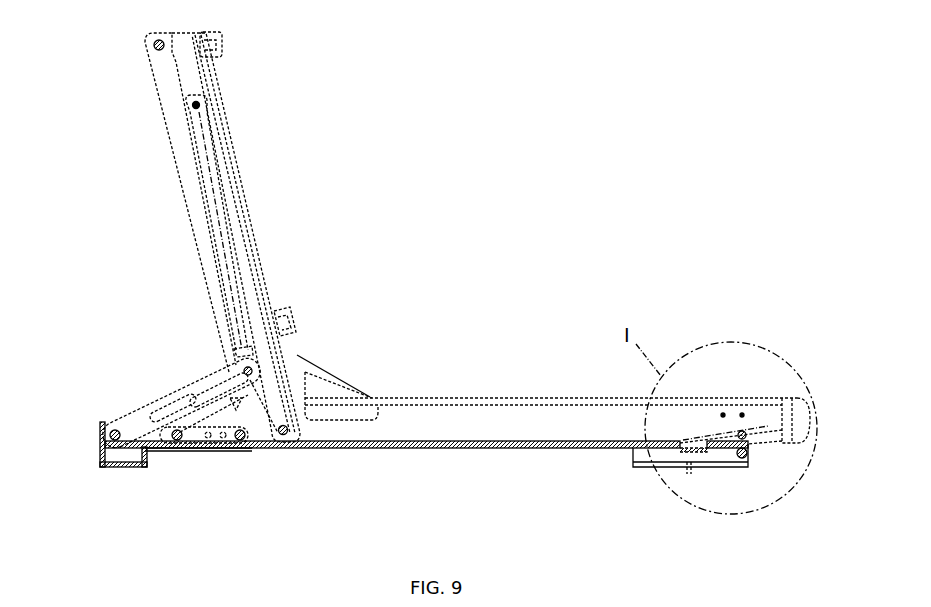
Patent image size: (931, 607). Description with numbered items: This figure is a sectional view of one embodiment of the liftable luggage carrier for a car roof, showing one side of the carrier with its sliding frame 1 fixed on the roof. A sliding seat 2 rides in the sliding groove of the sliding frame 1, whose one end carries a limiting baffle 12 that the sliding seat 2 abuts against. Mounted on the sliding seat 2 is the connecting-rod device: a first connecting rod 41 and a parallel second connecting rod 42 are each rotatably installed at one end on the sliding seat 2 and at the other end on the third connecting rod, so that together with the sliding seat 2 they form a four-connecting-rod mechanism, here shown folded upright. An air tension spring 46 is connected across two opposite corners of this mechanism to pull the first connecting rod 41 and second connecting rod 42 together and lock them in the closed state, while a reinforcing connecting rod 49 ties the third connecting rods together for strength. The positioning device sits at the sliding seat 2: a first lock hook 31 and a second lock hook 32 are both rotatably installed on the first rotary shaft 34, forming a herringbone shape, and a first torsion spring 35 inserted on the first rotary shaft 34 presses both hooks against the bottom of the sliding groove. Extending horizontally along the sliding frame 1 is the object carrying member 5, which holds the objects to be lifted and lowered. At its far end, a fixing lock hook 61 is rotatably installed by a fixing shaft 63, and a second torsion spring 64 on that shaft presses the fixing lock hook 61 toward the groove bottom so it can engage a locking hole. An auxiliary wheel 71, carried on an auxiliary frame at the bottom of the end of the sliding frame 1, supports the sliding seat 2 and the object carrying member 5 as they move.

The sliding frame 1 is at (423, 450).
The sliding seat 2 is at (178, 396).
The upper rail 5 is at (528, 398).
The limiting baffle 12 is at (98, 443).
The first lock hook 31 is at (207, 392).
The second lock hook 32 is at (227, 450).
The first rotary shaft 34 is at (172, 450).
The first torsion spring 35 is at (193, 448).
The first connecting rod 41 is at (163, 107).
The second connecting rod 42 is at (257, 275).
The air tension spring 46 is at (228, 212).
The reinforcing connecting rod 49 is at (293, 316).
The fixing lock hook 61 is at (698, 451).
The fixing shaft 63 is at (749, 457).
The second torsion spring 64 is at (740, 431).
The auxiliary wheel 71 is at (741, 464).